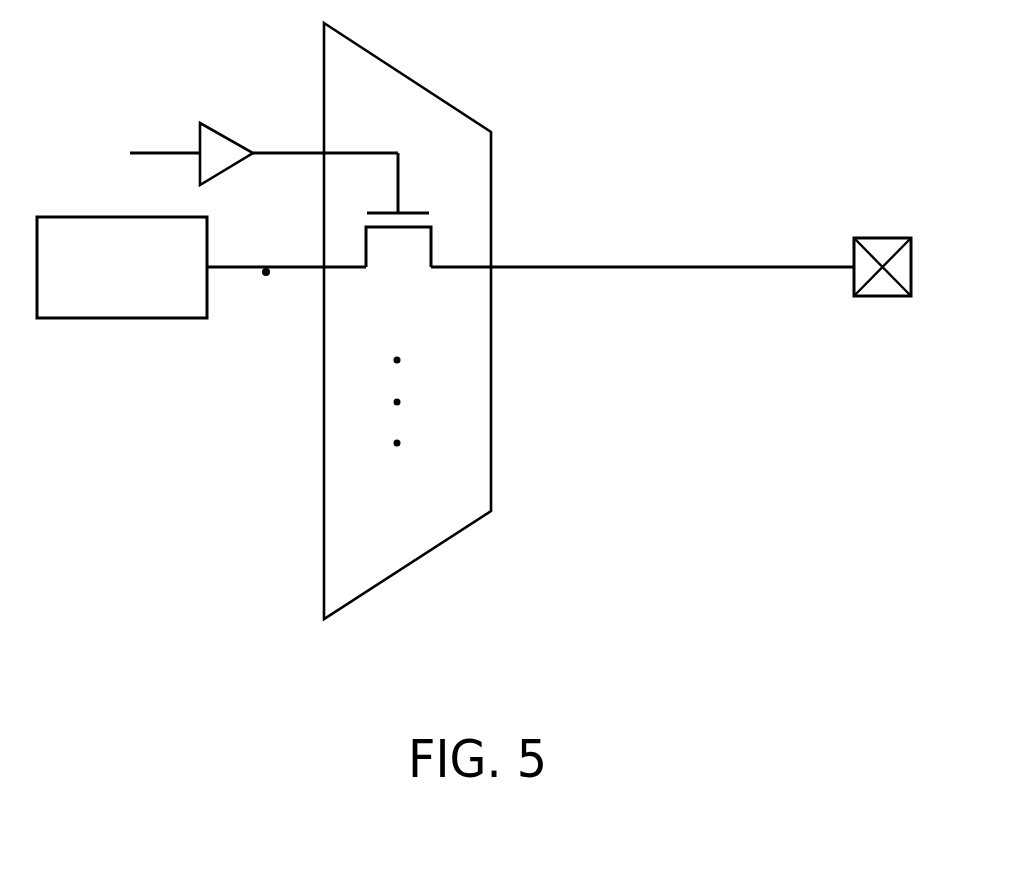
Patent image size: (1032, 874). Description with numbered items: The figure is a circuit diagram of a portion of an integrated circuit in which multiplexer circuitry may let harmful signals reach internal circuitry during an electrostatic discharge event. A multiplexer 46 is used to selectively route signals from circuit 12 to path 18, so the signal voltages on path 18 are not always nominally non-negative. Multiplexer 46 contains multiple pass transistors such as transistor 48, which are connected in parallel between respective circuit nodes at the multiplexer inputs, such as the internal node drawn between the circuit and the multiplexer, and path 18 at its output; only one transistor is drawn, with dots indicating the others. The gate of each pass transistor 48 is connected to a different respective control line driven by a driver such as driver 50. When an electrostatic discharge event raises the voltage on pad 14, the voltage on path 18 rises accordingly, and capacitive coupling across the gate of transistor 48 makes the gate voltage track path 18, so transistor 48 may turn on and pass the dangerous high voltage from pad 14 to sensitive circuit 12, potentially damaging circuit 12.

The circuit 12 is at (120, 320).
The pad 14 is at (876, 237).
The path 18 is at (668, 265).
The multiplexer 46 is at (430, 90).
The pass transistor 48 is at (455, 208).
The driver 50 is at (221, 132).